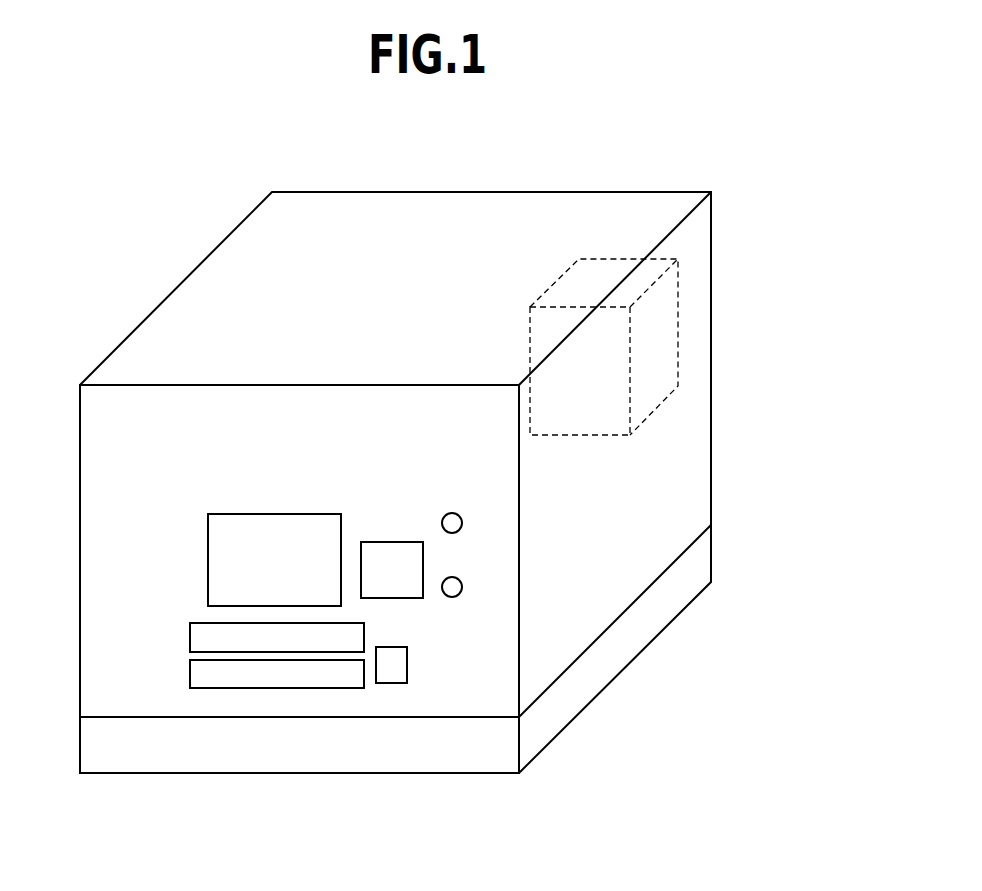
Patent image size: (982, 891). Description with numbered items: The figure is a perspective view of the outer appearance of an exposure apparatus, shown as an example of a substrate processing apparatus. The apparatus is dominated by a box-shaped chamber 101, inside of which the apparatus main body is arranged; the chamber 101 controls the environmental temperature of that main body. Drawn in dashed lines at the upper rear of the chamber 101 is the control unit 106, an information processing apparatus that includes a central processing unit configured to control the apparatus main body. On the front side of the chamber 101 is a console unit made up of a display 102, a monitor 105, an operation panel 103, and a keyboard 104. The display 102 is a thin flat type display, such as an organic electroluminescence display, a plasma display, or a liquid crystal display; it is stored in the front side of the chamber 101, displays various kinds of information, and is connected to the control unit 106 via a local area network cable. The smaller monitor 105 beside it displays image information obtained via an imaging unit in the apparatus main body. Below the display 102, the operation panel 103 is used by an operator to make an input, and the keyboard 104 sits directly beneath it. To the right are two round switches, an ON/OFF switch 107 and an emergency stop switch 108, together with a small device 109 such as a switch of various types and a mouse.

The chamber 101 is at (224, 255).
The display 102 is at (271, 531).
The operation panel 103 is at (200, 640).
The keyboard 104 is at (200, 677).
The monitor 105 is at (391, 558).
The control unit 106 is at (659, 350).
The ON/OFF switch 107 is at (451, 600).
The emergency stop switch 108 is at (453, 519).
The device 109 is at (390, 665).